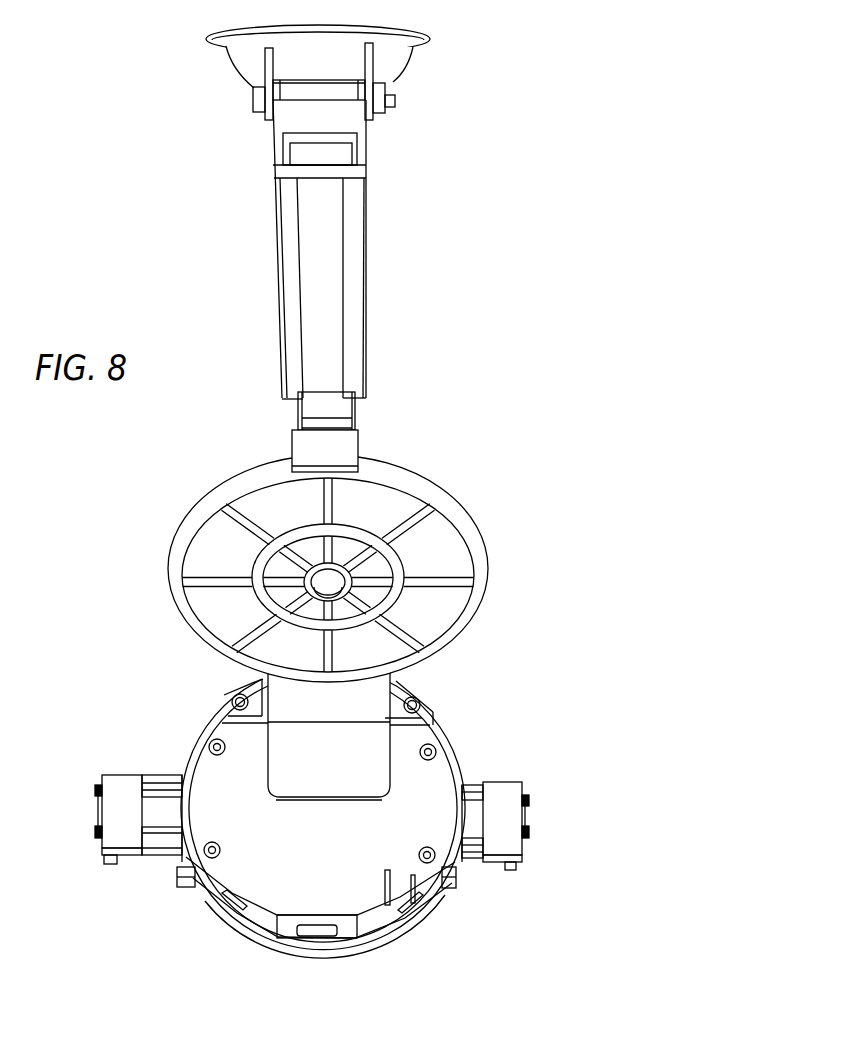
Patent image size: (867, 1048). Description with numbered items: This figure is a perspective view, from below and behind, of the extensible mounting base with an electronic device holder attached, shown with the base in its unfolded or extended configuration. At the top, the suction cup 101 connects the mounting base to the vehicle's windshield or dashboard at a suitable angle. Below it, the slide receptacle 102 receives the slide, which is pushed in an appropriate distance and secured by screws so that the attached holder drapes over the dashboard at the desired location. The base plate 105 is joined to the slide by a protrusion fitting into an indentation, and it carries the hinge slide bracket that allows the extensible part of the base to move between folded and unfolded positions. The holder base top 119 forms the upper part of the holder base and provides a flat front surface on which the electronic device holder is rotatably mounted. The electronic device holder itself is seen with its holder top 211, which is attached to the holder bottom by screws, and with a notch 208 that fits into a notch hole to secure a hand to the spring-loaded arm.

The suction cup 101 is at (397, 58).
The slide receptacle 102 is at (370, 273).
The base plate 105 is at (488, 578).
The holder base top 119 is at (458, 778).
The notch 208 is at (510, 825).
The holder top 211 is at (357, 948).